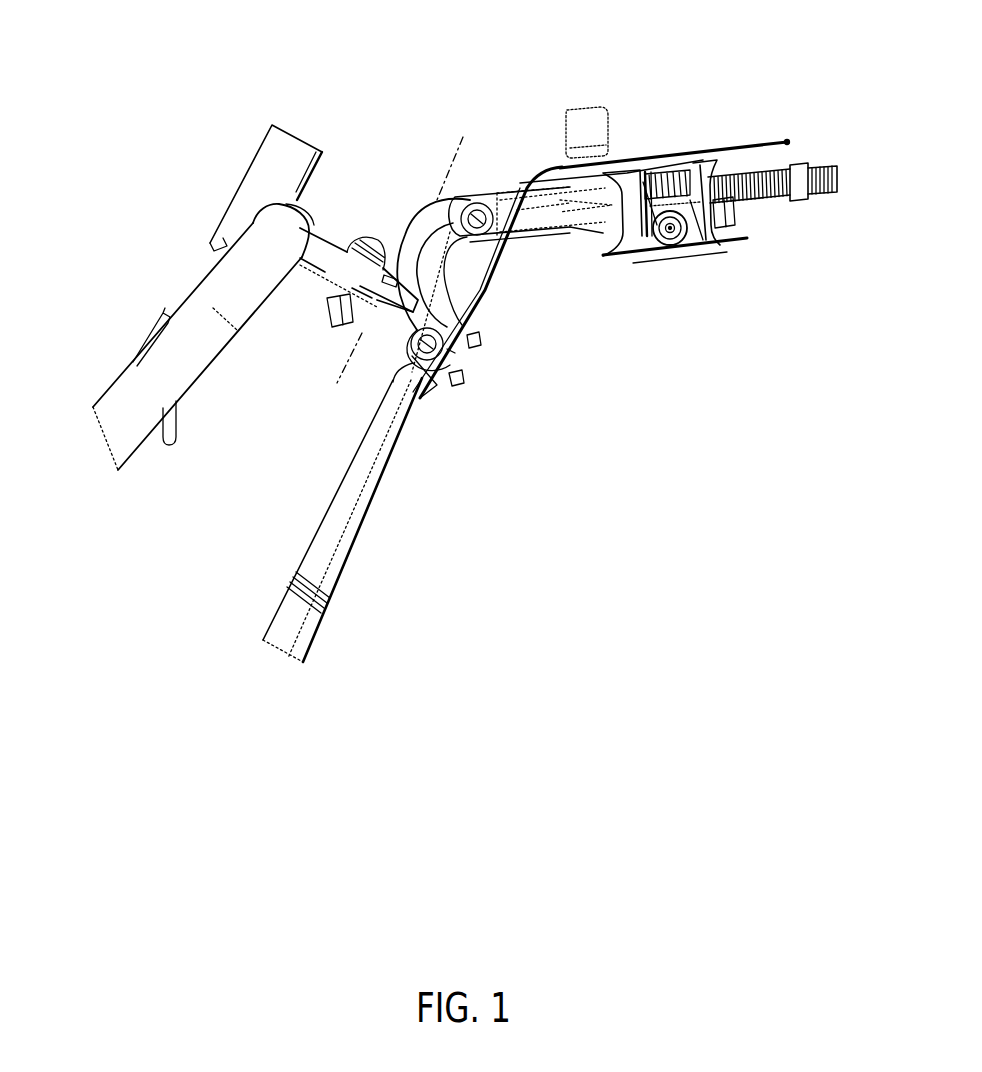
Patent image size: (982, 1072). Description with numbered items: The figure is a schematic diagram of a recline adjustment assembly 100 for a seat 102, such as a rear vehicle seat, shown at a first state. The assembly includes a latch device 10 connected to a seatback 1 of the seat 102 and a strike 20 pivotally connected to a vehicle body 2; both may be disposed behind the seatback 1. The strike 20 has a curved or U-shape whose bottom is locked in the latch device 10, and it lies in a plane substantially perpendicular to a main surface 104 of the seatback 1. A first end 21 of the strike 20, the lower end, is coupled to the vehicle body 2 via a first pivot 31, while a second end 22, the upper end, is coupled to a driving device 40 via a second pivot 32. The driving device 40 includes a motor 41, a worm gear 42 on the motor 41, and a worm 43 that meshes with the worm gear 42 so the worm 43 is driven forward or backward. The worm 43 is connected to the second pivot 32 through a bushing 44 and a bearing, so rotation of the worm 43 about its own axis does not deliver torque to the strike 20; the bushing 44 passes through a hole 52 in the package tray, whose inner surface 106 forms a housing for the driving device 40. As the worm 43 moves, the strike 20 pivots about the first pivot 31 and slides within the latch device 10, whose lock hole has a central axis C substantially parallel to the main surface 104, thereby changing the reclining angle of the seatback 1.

The recline adjustment assembly 100 is at (478, 70).
The seatback 1 is at (198, 282).
The seat 102 is at (120, 380).
The main surface 104 is at (207, 367).
The latch device 10 is at (316, 231).
The strike 20 is at (398, 218).
The first end 21 is at (397, 330).
The second end 22 is at (449, 192).
The central axis C is at (412, 245).
The first pivot 31 is at (447, 349).
The second pivot 32 is at (407, 269).
The bushing 44 is at (500, 193).
The hole 52 is at (497, 292).
The vehicle body 2 is at (623, 161).
The inner surface 106 is at (788, 145).
The driving device 40 is at (718, 270).
The motor 41 is at (669, 246).
The worm gear 42 is at (735, 210).
The worm 43 is at (828, 169).